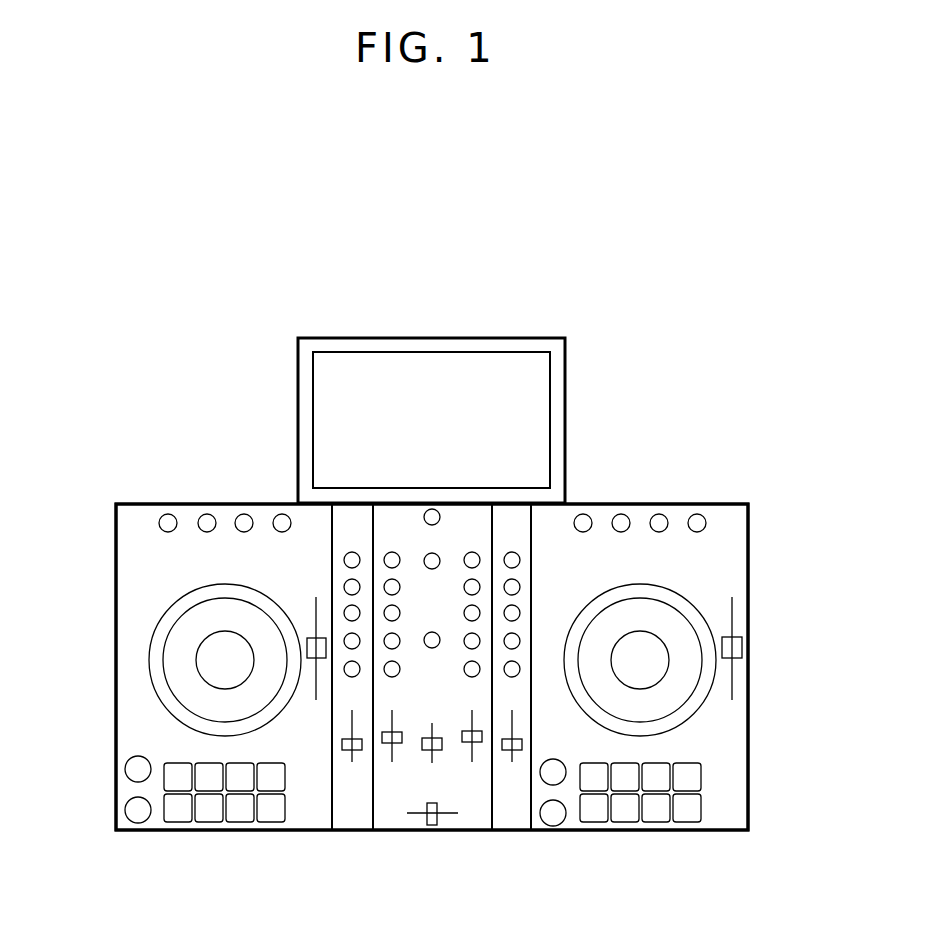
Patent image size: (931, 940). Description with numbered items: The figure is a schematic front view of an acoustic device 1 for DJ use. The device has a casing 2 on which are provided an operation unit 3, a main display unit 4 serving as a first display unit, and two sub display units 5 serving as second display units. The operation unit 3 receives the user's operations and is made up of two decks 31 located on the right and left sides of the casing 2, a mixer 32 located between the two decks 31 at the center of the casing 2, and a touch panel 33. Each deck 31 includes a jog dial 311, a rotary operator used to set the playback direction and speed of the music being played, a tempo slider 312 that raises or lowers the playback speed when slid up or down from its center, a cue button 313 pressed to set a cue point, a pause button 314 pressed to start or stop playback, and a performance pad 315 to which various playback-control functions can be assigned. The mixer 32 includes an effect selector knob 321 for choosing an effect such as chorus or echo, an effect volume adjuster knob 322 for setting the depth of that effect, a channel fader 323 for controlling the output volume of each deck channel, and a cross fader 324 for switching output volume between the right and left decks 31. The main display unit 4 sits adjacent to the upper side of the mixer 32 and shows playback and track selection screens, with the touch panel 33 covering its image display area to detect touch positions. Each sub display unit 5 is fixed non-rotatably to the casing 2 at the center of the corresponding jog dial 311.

The acoustic device 1 is at (716, 284).
The casing 2 is at (733, 538).
The operation unit 3 is at (724, 513).
The main display unit 4 is at (503, 349).
The touch panel 33 is at (360, 371).
The deck 31 is at (183, 520).
The jog dial 311 is at (185, 672).
The tempo slider 312 is at (307, 648).
The cue button 313 is at (140, 770).
The pause button 314 is at (140, 811).
The performance pad 315 is at (243, 805).
The mixer 32 is at (398, 520).
The effect selector knob 321 is at (348, 551).
The effect volume adjuster knob 322 is at (343, 588).
The channel fader 323 is at (355, 752).
The cross fader 324 is at (425, 816).
The sub display unit 5 is at (217, 660).